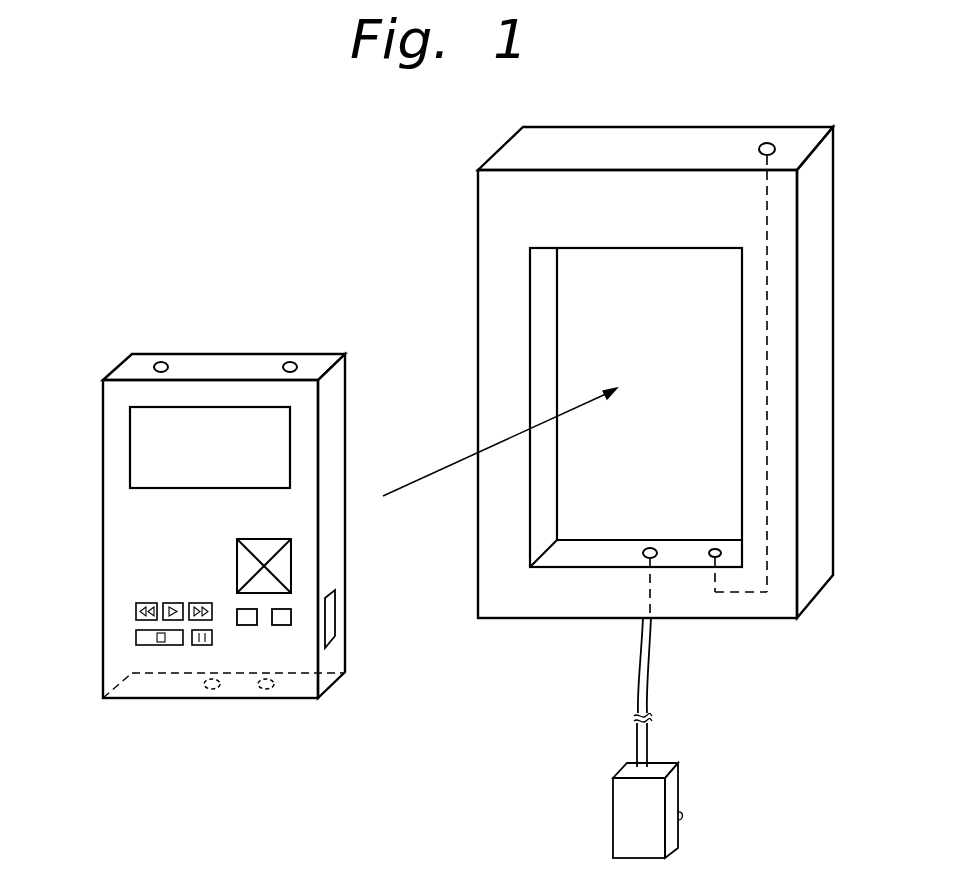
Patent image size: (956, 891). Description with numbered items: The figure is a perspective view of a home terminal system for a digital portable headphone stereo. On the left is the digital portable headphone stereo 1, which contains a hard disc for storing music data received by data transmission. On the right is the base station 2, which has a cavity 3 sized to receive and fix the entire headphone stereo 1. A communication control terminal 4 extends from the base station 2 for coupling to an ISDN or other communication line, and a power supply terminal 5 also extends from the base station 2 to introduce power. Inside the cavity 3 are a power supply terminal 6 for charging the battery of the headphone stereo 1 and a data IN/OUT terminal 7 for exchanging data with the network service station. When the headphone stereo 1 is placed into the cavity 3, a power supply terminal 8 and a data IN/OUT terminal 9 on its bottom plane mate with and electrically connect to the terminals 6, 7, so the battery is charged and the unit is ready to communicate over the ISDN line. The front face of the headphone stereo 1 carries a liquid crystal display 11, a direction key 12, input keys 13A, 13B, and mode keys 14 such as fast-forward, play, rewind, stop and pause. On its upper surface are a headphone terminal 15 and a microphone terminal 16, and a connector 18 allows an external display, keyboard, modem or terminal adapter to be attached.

The digital portable headphone stereo 1 is at (222, 343).
The base station 2 is at (458, 182).
The cavity 3 is at (544, 330).
The communication control terminal 4 is at (775, 148).
The power supply terminal 5 is at (645, 624).
The power supply terminal 6 is at (641, 555).
The data IN/OUT terminal 7 is at (713, 559).
The power supply terminal 8 is at (212, 690).
The data IN/OUT terminal 9 is at (266, 690).
The liquid crystal display 11 is at (277, 436).
The direction key 12 is at (290, 556).
The input key 13A is at (282, 626).
The input key 13B is at (250, 626).
The mode keys 14 is at (158, 590).
The headphone terminal 15 is at (291, 362).
The microphone terminal 16 is at (162, 362).
The connector 18 is at (332, 611).